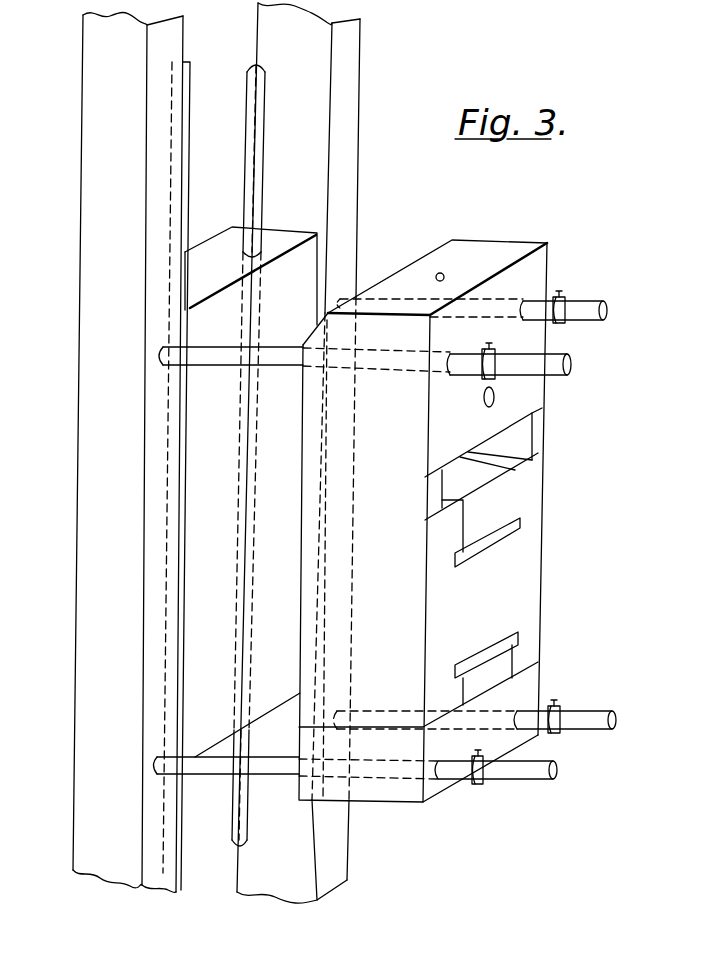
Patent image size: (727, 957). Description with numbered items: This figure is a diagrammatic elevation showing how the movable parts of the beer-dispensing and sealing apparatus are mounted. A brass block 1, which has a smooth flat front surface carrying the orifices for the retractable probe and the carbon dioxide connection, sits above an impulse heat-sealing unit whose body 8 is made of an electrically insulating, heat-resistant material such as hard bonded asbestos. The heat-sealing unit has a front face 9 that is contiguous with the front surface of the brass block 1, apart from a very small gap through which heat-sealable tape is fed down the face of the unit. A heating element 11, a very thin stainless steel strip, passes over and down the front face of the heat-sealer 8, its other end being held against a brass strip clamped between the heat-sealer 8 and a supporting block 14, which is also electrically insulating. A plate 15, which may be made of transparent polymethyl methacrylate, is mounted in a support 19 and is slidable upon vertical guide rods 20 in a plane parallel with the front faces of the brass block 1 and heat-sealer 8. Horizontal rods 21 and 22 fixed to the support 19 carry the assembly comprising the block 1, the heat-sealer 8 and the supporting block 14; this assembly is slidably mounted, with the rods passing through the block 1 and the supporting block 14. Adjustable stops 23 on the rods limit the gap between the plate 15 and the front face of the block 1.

The brass block 1 is at (543, 265).
The body of the impulse heat-sealing unit 8 is at (520, 585).
The front face of the heat-sealing unit 9 is at (303, 425).
The heating element 11 is at (502, 513).
The supporting block 14 is at (529, 683).
The plate 15 is at (300, 256).
The support 19 is at (105, 124).
The vertical guide rods 20 is at (262, 118).
The horizontal rod 21 is at (227, 360).
The horizontal rod 22 is at (204, 763).
The adjustable stops 23 is at (565, 302).